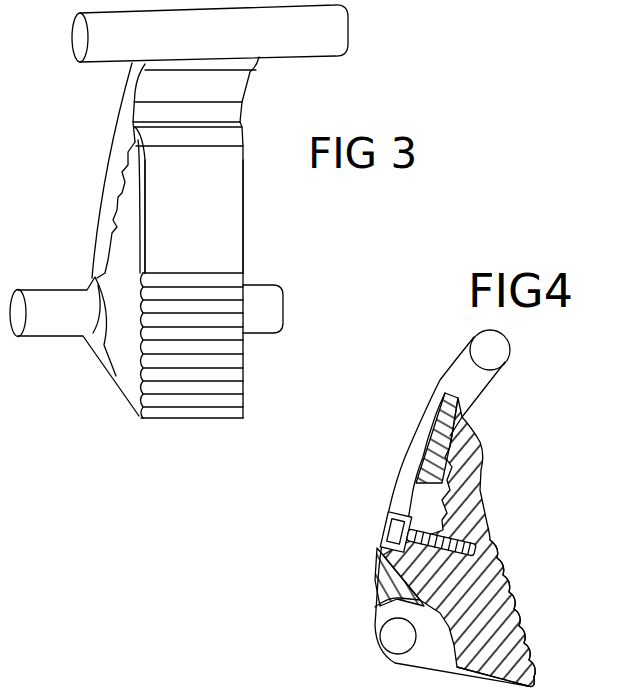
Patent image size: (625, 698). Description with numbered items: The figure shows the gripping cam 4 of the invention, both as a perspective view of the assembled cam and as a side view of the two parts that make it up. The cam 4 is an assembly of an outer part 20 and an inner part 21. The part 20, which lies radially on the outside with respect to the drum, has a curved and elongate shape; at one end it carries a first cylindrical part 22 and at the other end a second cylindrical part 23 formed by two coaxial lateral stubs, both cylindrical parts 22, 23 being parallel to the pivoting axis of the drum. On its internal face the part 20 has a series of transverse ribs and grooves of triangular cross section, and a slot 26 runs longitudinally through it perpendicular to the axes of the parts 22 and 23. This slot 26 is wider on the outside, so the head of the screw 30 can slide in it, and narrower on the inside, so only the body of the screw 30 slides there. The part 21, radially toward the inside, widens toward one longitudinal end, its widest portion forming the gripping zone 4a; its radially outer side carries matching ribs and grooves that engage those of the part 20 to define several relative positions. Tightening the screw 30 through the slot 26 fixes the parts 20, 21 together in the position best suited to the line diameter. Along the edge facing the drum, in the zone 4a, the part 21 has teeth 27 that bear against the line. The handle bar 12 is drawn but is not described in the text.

In FIG. 3, the gripping cam 4 is at (282, 221).
In FIG. 4, the gripping cam 4 is at (427, 376).
In FIG. 3, the gripping zone 4a is at (198, 428).
In FIG. 4, the gripping zone 4a is at (540, 646).
In FIG. 3, the handle bar 12 is at (318, 47).
In FIG. 3, the outer part 20 is at (103, 205).
In FIG. 4, the outer part 20 is at (397, 572).
In FIG. 3, the inner part 21 is at (225, 247).
In FIG. 4, the inner part 21 is at (470, 527).
In FIG. 4, the first cylindrical part 22 is at (500, 358).
In FIG. 3, the second cylindrical part 23 is at (65, 335).
In FIG. 4, the second cylindrical part 23 is at (385, 643).
In FIG. 4, the slot 26 is at (410, 460).
In FIG. 3, the teeth 27 is at (200, 363).
In FIG. 4, the teeth 27 is at (513, 598).
In FIG. 4, the screw 30 is at (383, 525).